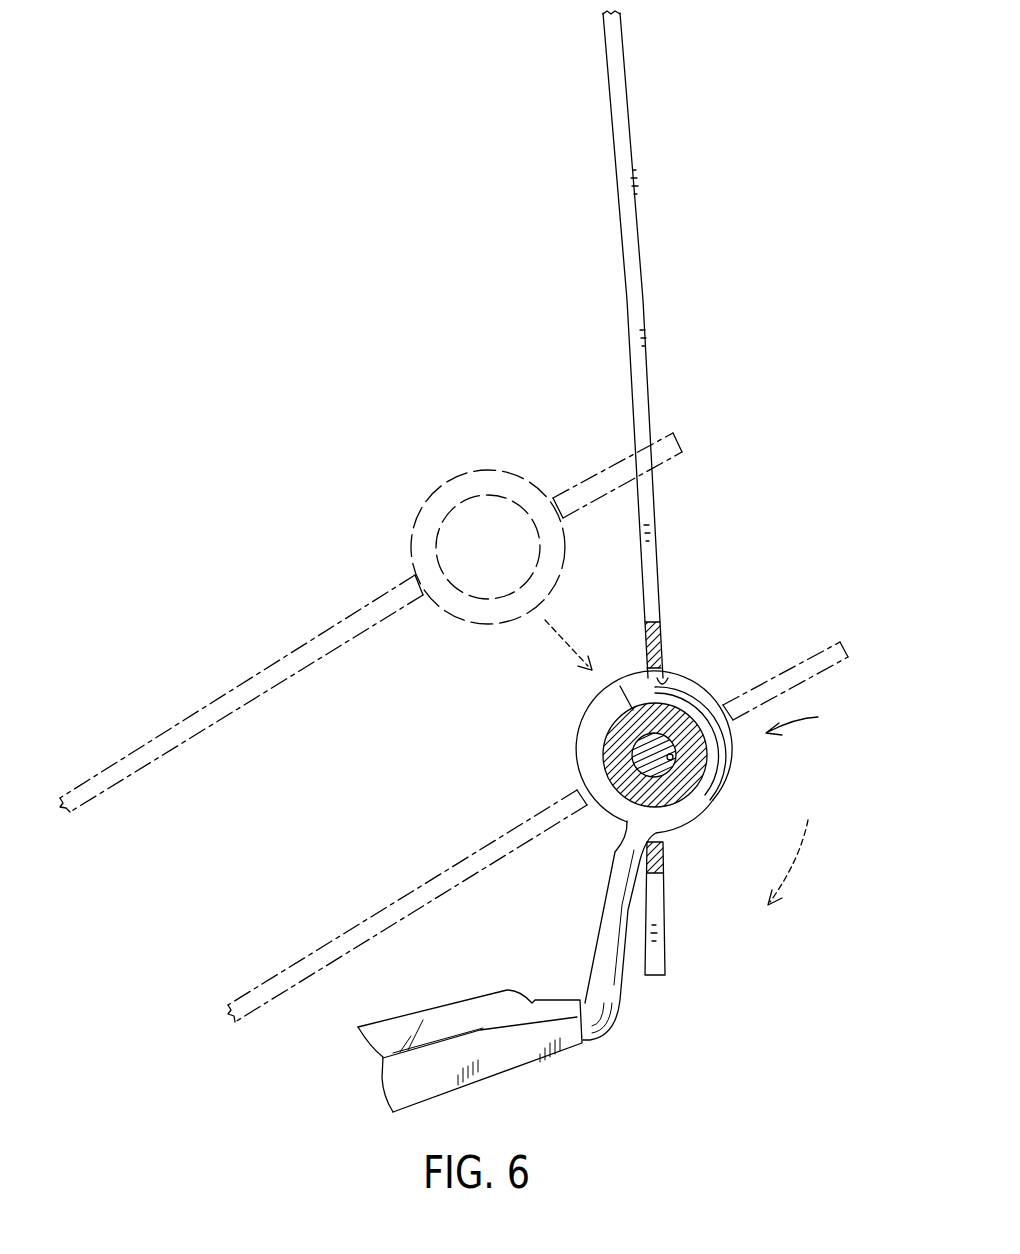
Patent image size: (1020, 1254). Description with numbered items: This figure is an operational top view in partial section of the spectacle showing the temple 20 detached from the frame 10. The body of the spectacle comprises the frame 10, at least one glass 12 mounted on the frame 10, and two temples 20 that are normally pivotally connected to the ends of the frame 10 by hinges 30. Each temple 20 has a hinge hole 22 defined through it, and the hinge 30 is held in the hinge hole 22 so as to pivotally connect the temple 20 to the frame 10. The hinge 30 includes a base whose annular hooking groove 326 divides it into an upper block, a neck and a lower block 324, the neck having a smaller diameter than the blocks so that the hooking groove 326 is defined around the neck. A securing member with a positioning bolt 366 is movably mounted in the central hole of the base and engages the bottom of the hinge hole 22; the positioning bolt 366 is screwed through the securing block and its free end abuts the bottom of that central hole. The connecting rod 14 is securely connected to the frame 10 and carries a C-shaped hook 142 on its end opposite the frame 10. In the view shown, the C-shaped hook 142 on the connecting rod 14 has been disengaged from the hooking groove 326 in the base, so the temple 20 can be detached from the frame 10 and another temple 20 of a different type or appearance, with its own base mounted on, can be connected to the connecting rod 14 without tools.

The frame 10 is at (578, 853).
The glass 12 is at (433, 1020).
The connecting rod 14 is at (613, 923).
The temple 20 is at (632, 245).
The hinge hole 22 is at (667, 673).
The hinge 30 is at (808, 717).
The C-shaped hook 142 is at (637, 688).
The lower block 324 is at (597, 702).
The hooking groove 326 is at (590, 756).
The positioning bolt 366 is at (673, 759).